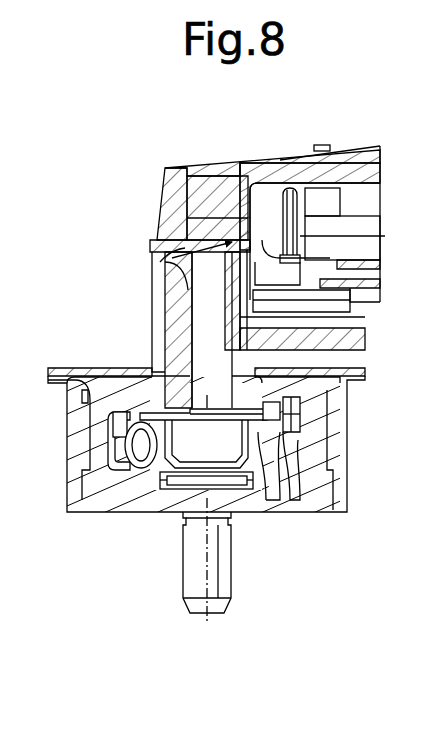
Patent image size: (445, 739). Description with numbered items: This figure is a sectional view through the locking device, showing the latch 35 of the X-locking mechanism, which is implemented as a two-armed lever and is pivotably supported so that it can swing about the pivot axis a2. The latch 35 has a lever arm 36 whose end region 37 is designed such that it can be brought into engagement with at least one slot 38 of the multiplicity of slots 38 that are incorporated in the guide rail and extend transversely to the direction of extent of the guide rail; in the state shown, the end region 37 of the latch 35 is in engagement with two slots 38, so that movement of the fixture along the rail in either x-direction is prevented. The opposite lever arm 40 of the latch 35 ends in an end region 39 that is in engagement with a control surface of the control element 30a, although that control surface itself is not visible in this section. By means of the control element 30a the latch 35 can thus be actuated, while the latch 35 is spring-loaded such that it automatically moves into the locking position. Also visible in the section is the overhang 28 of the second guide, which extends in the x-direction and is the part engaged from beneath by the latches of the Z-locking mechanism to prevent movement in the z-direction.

The lever arm 40 is at (168, 232).
The pivot axis a2 is at (172, 256).
The end region 39 is at (262, 252).
The control element 30a is at (352, 300).
The latch 35 is at (150, 322).
The overhang 28 is at (146, 385).
The lever arm 36 is at (84, 392).
The slot 38 is at (108, 440).
The end region 37 is at (128, 462).